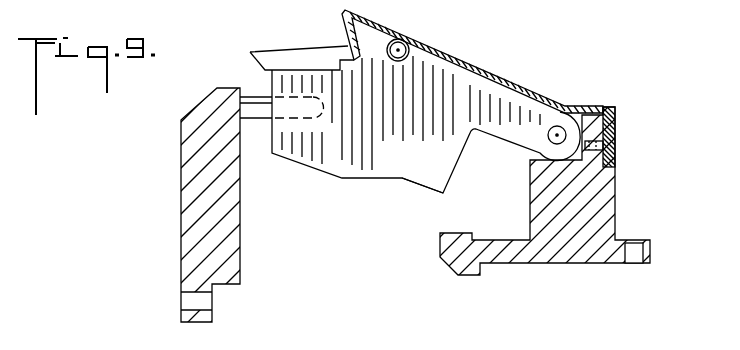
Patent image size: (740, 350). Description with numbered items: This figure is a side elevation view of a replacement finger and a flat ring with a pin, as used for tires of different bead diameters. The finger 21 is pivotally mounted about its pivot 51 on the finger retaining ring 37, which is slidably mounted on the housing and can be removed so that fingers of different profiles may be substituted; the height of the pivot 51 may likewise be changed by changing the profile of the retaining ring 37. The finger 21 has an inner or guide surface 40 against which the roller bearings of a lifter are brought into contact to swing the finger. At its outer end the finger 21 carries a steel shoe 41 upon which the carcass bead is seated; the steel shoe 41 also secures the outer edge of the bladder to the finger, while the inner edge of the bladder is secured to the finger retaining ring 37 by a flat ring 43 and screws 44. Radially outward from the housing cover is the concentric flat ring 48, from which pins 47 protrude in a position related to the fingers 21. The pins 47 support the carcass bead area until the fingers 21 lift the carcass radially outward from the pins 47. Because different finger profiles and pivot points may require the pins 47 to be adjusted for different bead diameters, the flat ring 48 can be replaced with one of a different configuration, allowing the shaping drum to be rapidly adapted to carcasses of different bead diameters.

The finger 21 is at (340, 155).
The finger retaining ring 37 is at (562, 284).
The guide surface 40 is at (371, 180).
The steel shoe 41 is at (298, 50).
The flat ring 43 is at (616, 118).
The screws 44 is at (616, 147).
The pins 47 is at (262, 125).
The flat ring 48 is at (181, 218).
The pivot 51 is at (560, 112).